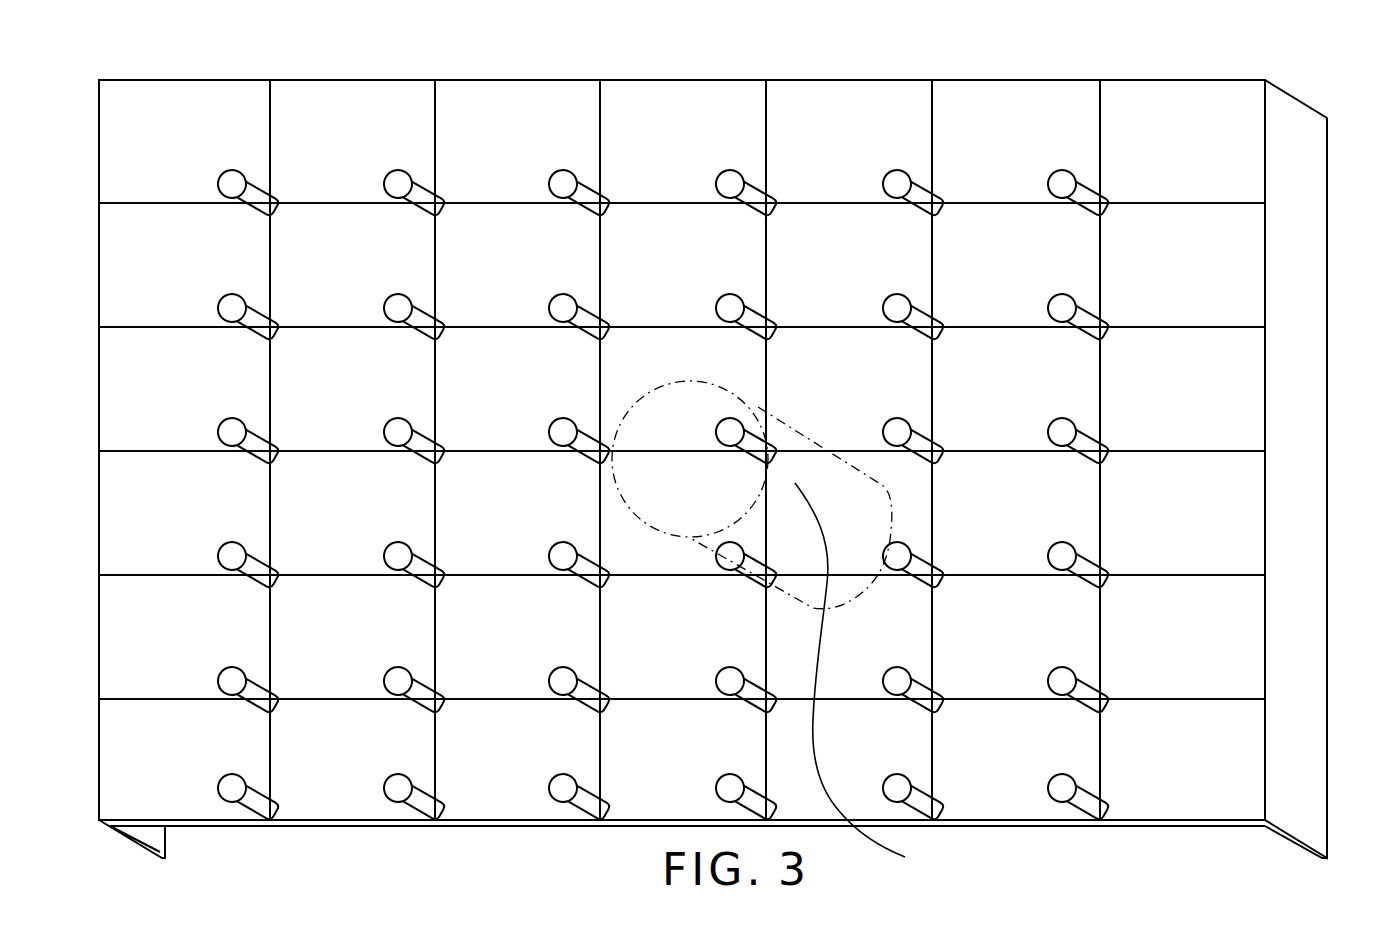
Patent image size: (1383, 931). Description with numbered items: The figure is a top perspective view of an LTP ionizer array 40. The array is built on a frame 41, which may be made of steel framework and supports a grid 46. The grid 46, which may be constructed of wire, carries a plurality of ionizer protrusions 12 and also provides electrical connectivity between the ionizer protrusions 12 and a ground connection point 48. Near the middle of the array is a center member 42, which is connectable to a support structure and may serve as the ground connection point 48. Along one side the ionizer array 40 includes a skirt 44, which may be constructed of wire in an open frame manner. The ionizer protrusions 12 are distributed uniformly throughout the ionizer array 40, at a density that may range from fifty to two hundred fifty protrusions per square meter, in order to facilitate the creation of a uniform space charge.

The ionizer protrusions 12 is at (552, 170).
The LTP ionizer array 40 is at (1035, 76).
The frame 41 is at (380, 79).
The center member 42 is at (683, 440).
The skirt 44 is at (1297, 433).
The grid 46 is at (270, 129).
The ground connection point 48 is at (863, 675).